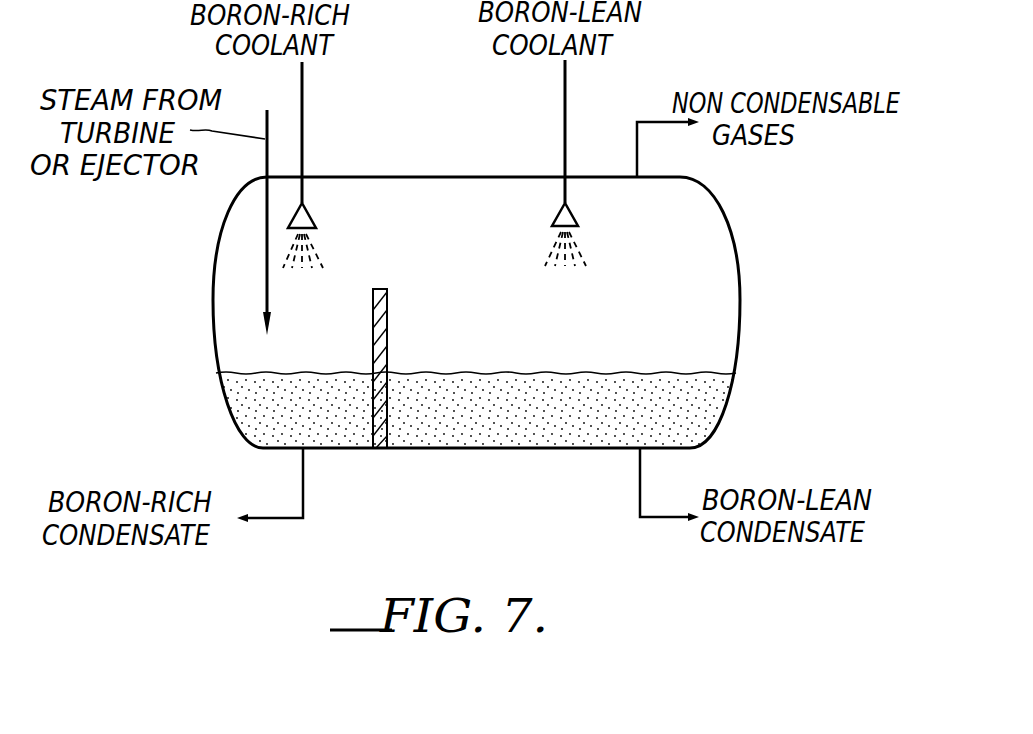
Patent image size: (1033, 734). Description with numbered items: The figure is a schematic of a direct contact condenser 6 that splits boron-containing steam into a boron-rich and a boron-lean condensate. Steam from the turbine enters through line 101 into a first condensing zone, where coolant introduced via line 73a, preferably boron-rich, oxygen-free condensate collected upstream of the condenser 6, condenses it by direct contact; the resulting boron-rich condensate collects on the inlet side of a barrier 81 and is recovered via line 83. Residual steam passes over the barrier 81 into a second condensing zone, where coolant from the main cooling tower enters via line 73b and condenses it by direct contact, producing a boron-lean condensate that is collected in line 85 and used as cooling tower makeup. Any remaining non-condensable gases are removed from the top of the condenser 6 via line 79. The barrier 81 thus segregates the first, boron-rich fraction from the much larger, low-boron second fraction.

The condenser 6 is at (418, 177).
The line 101 is at (265, 165).
The line 73a is at (303, 117).
The line 73b is at (563, 105).
The line 79 is at (640, 100).
The barrier 81 is at (388, 327).
The line 83 is at (304, 500).
The line 85 is at (638, 490).